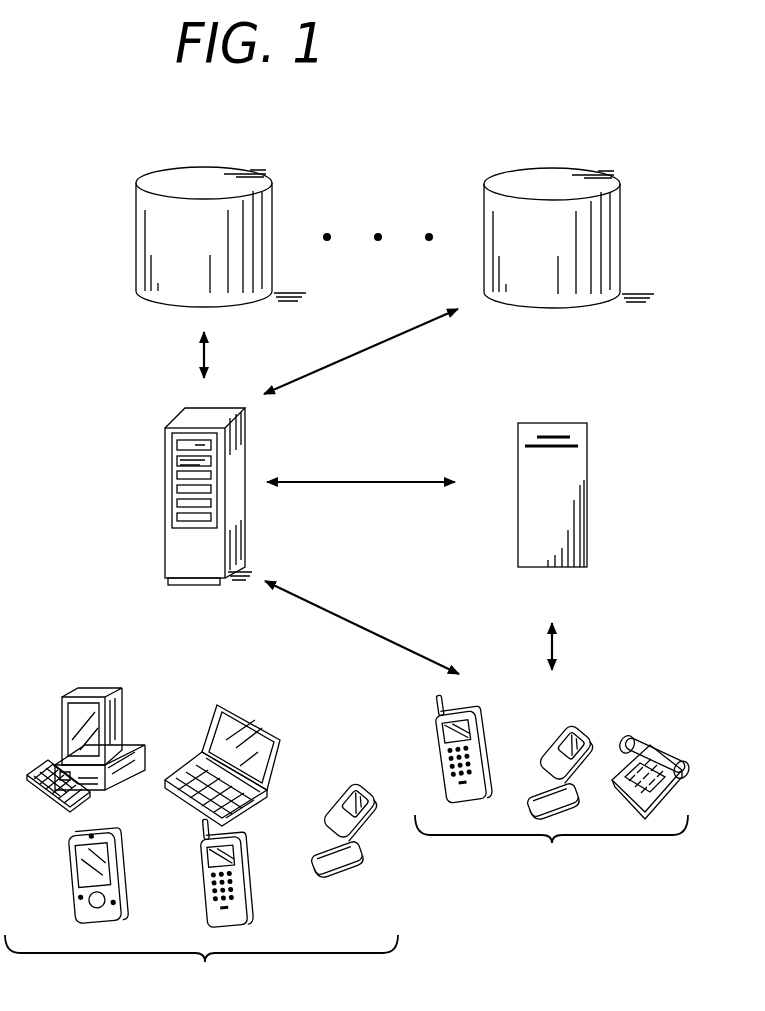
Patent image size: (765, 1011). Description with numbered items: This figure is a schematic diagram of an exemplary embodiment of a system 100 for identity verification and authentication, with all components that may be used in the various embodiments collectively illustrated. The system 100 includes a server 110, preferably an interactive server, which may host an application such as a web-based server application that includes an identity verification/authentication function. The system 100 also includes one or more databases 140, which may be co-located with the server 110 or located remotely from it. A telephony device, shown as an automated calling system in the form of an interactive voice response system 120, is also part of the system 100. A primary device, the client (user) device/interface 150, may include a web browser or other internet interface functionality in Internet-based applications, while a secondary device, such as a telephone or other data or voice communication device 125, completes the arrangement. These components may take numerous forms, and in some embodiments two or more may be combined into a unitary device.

The system 100 is at (556, 108).
The server 110 is at (165, 462).
The interactive voice response system 120 is at (587, 444).
The data or voice communication device 125 is at (553, 780).
The databases 140 is at (237, 167).
The client device 150 is at (201, 840).